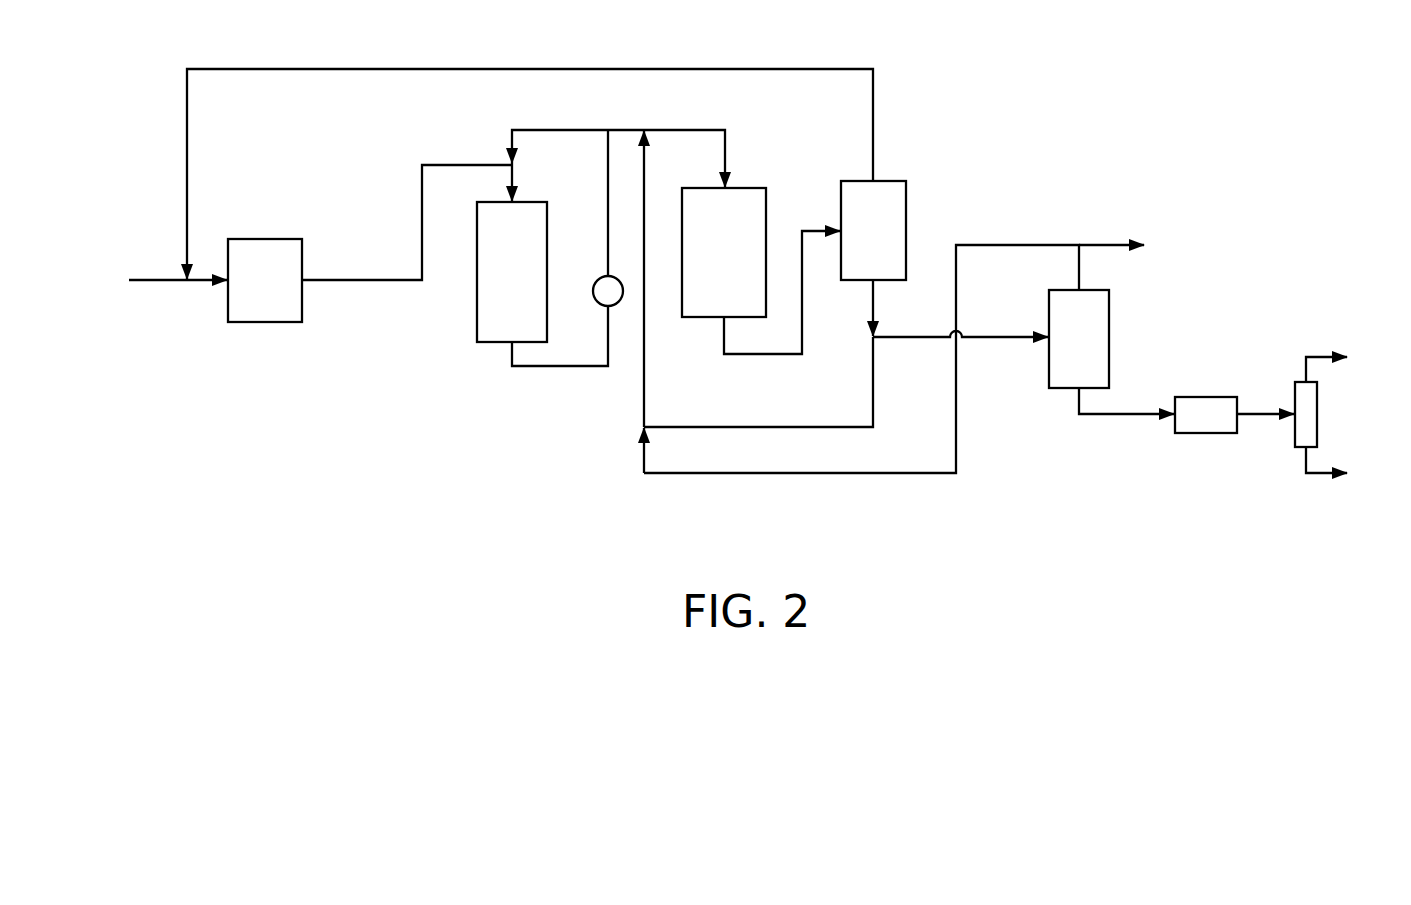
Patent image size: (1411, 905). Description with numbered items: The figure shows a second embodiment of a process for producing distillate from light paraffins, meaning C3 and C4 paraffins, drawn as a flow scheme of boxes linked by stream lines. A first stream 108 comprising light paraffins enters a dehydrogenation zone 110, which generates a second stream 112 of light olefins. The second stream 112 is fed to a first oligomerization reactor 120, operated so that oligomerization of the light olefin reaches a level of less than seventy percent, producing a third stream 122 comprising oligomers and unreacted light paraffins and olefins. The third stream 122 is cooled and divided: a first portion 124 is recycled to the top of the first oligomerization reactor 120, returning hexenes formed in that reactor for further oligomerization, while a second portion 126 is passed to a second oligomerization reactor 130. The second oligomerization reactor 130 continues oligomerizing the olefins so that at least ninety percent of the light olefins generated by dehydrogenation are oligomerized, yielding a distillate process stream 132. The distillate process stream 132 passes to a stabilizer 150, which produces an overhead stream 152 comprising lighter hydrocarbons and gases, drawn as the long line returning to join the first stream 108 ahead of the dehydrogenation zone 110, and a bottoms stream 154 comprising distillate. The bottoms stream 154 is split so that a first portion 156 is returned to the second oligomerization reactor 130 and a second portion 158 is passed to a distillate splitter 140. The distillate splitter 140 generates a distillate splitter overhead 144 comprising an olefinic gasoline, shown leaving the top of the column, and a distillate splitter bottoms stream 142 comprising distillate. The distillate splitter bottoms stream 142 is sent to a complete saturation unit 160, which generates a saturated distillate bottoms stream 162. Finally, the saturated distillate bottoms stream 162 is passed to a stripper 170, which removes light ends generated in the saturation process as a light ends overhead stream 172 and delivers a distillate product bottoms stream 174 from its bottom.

The first stream 108 is at (157, 279).
The dehydrogenation zone 110 is at (289, 238).
The second stream 112 is at (362, 282).
The first oligomerization reactor 120 is at (530, 201).
The third stream 122 is at (545, 368).
The first portion 124 is at (547, 129).
The second portion 126 is at (677, 129).
The second oligomerization reactor 130 is at (748, 189).
The distillate process stream 132 is at (763, 357).
The distillate splitter 140 is at (1095, 290).
The distillate splitter bottoms stream 142 is at (1117, 416).
The distillate splitter overhead 144 is at (1079, 267).
The stabilizer 150 is at (897, 180).
The overhead stream 152 is at (860, 69).
The bottoms stream 154 is at (872, 306).
The first portion of the bottoms stream 156 is at (780, 427).
The second portion of the bottoms stream 158 is at (997, 339).
The complete saturation unit 160 is at (1210, 397).
The saturated distillate bottoms stream 162 is at (1257, 417).
The stripper 170 is at (1318, 414).
The light ends overhead stream 172 is at (1318, 354).
The distillate product bottoms stream 174 is at (1313, 477).